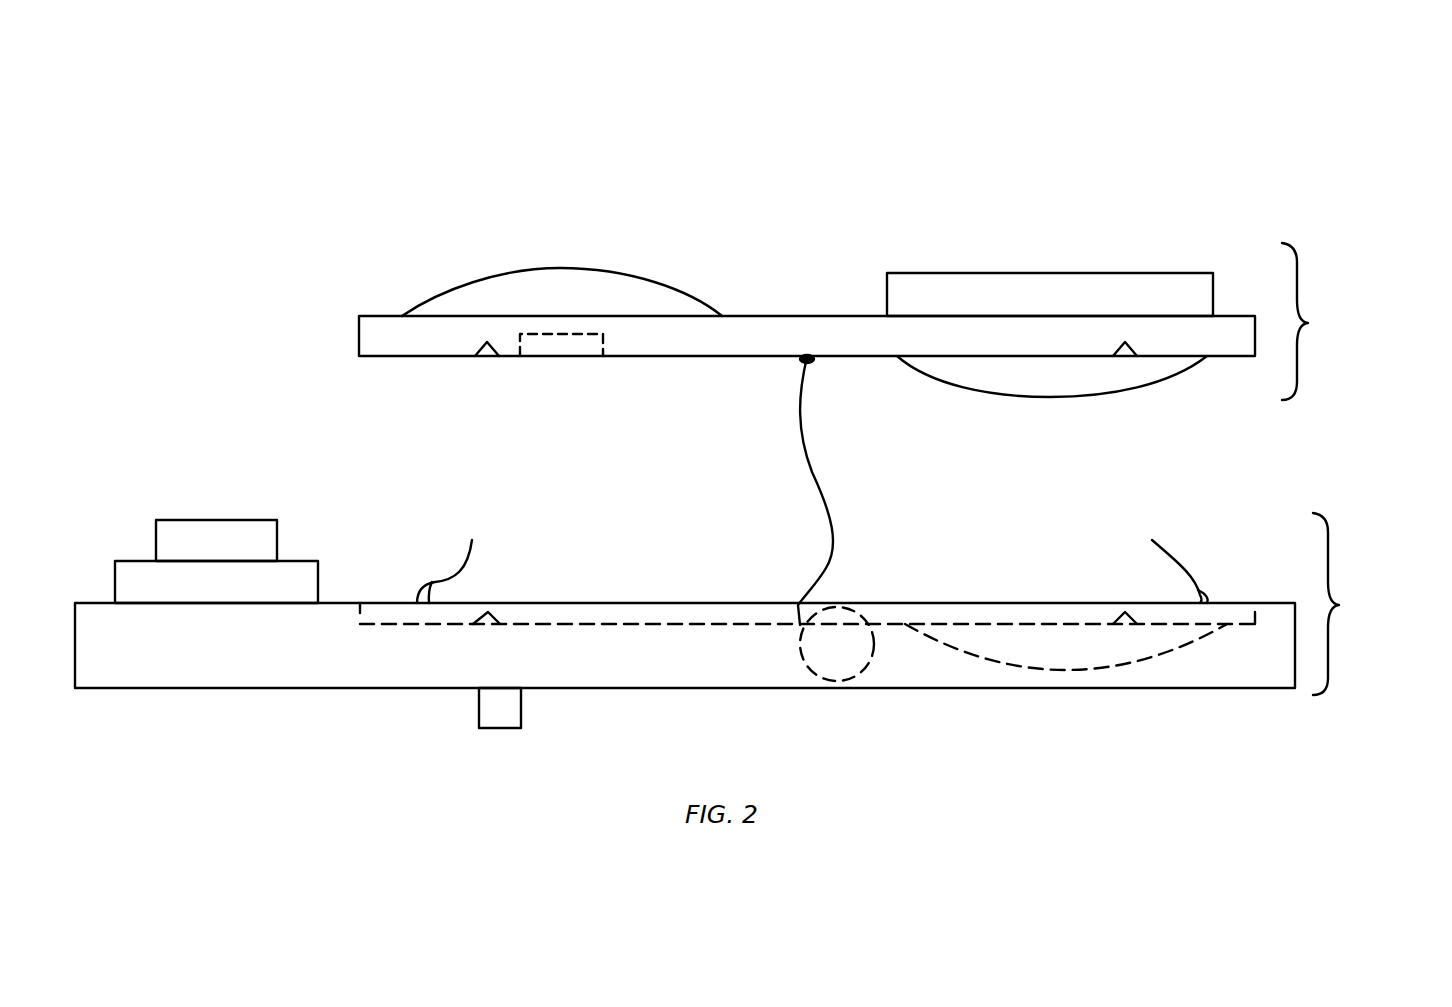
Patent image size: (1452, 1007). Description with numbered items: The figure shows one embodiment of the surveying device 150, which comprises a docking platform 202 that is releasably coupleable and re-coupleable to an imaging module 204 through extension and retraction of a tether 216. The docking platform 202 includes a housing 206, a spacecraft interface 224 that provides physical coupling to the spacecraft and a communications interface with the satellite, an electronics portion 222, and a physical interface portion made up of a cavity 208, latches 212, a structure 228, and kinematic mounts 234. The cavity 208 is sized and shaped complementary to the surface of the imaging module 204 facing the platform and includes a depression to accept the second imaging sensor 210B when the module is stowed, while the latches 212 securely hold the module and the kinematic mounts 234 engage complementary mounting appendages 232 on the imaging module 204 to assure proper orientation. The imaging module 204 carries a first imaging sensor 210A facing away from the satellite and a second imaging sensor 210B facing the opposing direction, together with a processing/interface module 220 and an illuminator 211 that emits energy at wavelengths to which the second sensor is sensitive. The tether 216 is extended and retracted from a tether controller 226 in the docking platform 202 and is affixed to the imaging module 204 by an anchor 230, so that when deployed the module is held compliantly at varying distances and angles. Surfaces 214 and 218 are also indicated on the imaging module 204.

The surveying device 150 is at (838, 175).
The docking platform 202 is at (1337, 605).
The imaging module 204 is at (1306, 323).
The housing 206 is at (1203, 688).
The cavity 208 is at (562, 612).
The first imaging sensor 210A is at (613, 272).
The second imaging sensor 210B is at (1087, 397).
The illuminator 211 is at (557, 348).
The latches 212 is at (812, 554).
The die surface 214 is at (440, 356).
The tether 216 is at (835, 550).
The die edge 218 is at (359, 340).
The processing/interface module 220 is at (997, 273).
The electronics portion 222 is at (283, 482).
The spacecraft interface 224 is at (490, 728).
The tether controller 226 is at (835, 683).
The physical interface structure 228 is at (1020, 667).
The anchor 230 is at (813, 362).
The mounting appendages 232 is at (490, 357).
The kinematic mounts 234 is at (490, 610).